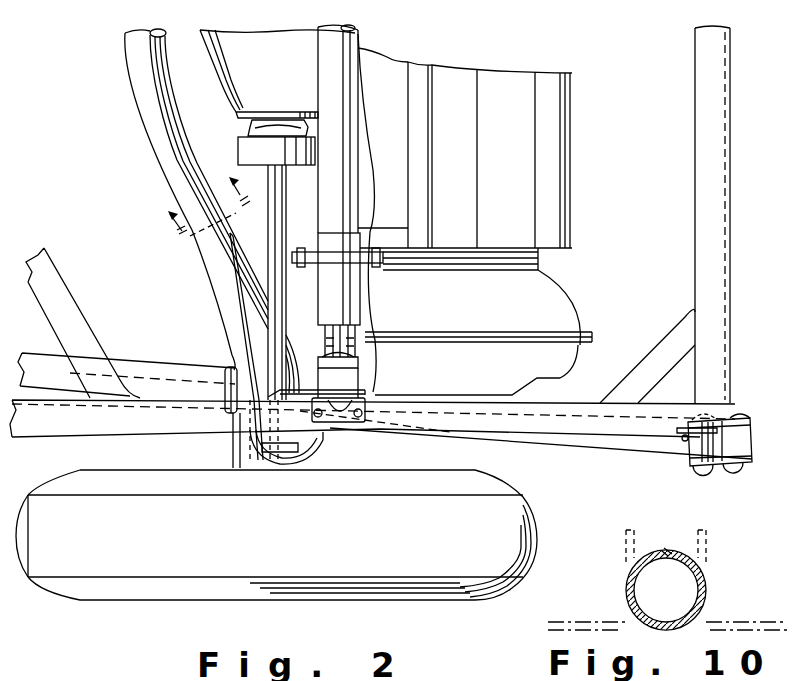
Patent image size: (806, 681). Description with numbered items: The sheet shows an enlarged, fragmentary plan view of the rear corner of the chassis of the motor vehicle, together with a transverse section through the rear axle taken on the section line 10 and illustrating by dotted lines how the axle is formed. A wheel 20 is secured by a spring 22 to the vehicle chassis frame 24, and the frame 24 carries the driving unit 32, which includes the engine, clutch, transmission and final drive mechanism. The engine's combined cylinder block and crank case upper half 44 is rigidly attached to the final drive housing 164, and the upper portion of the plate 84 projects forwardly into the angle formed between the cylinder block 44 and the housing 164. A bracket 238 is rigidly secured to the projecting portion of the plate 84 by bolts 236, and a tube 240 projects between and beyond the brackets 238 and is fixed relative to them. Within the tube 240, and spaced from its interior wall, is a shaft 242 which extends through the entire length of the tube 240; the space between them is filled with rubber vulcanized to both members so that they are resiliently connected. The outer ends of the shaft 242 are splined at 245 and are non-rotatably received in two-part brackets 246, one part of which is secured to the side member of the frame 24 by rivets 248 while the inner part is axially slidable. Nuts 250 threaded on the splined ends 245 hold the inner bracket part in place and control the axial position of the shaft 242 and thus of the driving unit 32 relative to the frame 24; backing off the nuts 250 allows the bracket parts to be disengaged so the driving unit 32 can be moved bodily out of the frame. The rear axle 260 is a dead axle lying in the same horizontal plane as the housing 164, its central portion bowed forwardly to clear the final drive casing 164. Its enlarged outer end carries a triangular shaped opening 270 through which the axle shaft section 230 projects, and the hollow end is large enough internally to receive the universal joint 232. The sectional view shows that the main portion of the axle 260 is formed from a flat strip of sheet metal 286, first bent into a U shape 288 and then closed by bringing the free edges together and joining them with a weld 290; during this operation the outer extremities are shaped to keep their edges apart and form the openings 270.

In FIG. 2, the section line 10 is at (194, 202).
In FIG. 2, the wheels 20 is at (430, 553).
In FIG. 2, the springs 22 is at (603, 447).
In FIG. 2, the vehicle chassis frame 24 is at (528, 420).
In FIG. 2, the driving unit 32 is at (602, 63).
In FIG. 2, the combined cylinder block and crank case upper half 44 is at (462, 88).
In FIG. 2, the plate 84 is at (507, 253).
In FIG. 2, the final drive housing 164 is at (272, 55).
In FIG. 2, the axle shaft section 230 is at (282, 224).
In FIG. 2, the universal joint 232 is at (287, 452).
In FIG. 2, the bolts 236 is at (305, 268).
In FIG. 2, the bracket 238 is at (385, 231).
In FIG. 2, the tube 240 is at (350, 88).
In FIG. 2, the shaft 242 is at (343, 330).
In FIG. 2, the splined ends 245 is at (345, 346).
In FIG. 2, the two-part brackets 246 is at (343, 382).
In FIG. 2, the rivets 248 is at (358, 421).
In FIG. 2, the nuts 250 is at (356, 362).
In FIG. 2, the rear axle 260 is at (137, 80).
In FIG. 10, the rear axle 260 is at (628, 593).
In FIG. 2, the triangular shaped opening 270 is at (245, 294).
In FIG. 10, the flat strip of sheet metal 286 is at (596, 605).
In FIG. 10, the U shape 288 is at (626, 545).
In FIG. 10, the weld 290 is at (666, 550).